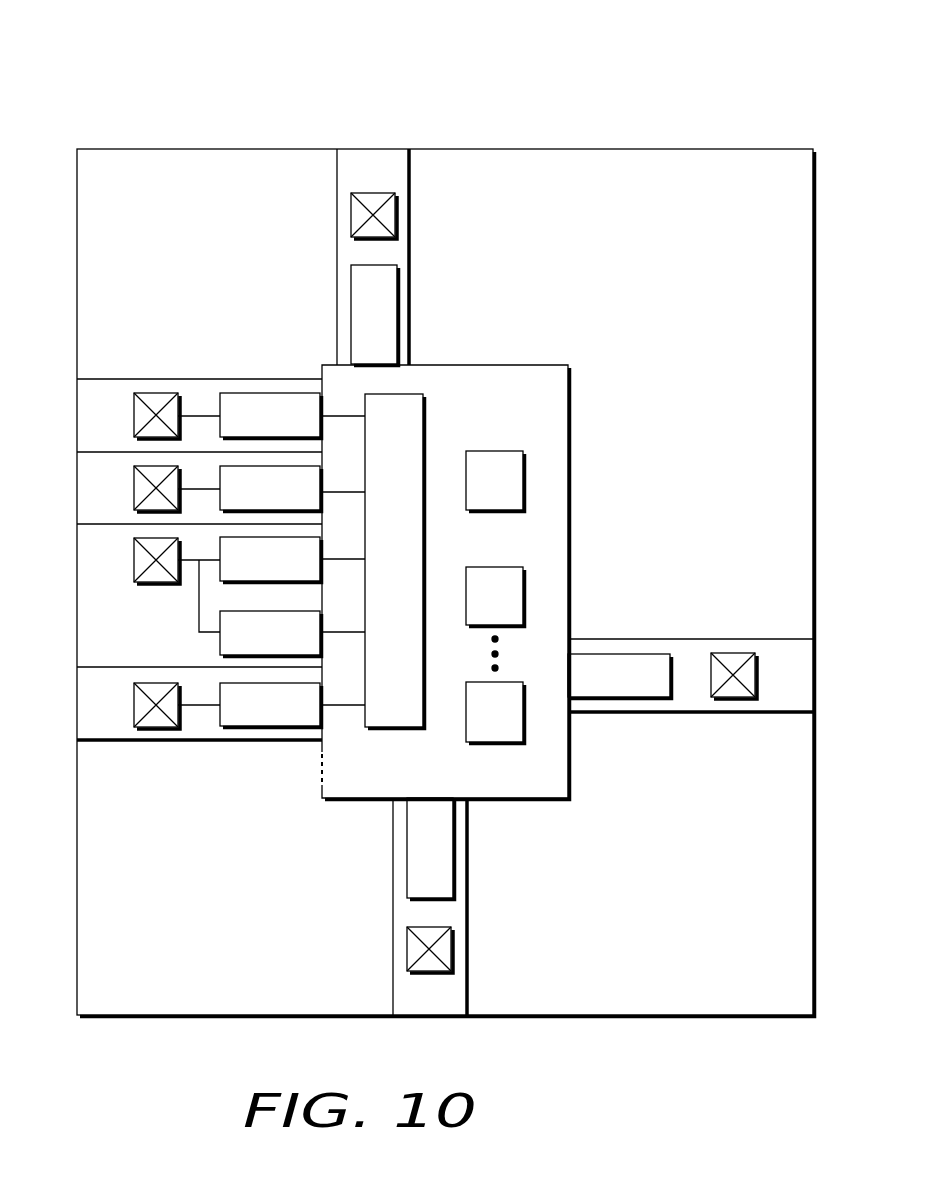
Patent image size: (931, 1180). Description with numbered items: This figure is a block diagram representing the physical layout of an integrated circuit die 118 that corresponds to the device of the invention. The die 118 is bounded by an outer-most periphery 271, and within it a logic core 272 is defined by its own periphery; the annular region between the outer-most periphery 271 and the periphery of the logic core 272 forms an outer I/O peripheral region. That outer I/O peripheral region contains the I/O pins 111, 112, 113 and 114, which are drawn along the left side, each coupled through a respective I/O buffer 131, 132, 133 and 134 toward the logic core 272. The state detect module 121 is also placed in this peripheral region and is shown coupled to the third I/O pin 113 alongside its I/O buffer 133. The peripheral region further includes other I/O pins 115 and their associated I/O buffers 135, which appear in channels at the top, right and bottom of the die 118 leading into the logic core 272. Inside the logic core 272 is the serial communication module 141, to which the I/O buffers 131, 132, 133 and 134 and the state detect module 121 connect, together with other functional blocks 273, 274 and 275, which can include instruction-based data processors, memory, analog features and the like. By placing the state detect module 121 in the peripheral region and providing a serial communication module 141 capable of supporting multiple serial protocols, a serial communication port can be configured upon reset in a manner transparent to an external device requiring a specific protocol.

The die 118 is at (740, 56).
The outer-most periphery of the die 271 is at (783, 149).
The logic core 272 is at (536, 363).
The functional block 273 is at (495, 481).
The functional block 274 is at (495, 597).
The functional block 275 is at (495, 713).
The serial communication module 141 is at (372, 561).
The I/O pin 111 is at (132, 420).
The I/O pin 112 is at (132, 493).
The I/O pin 113 is at (132, 565).
The I/O pin 114 is at (132, 710).
The I/O pin 115 is at (356, 193).
The I/O buffer 131 is at (271, 416).
The I/O buffer 132 is at (271, 489).
The I/O buffer 133 is at (271, 560).
The I/O buffer 134 is at (271, 705).
The state detect module 121 is at (271, 634).
The I/O buffer 135 is at (511, 582).